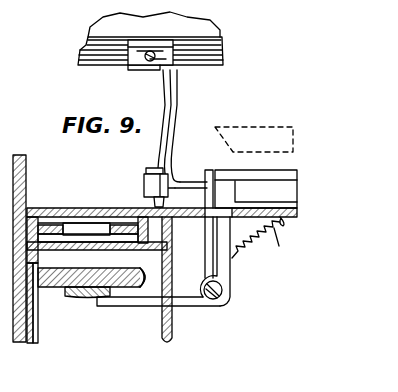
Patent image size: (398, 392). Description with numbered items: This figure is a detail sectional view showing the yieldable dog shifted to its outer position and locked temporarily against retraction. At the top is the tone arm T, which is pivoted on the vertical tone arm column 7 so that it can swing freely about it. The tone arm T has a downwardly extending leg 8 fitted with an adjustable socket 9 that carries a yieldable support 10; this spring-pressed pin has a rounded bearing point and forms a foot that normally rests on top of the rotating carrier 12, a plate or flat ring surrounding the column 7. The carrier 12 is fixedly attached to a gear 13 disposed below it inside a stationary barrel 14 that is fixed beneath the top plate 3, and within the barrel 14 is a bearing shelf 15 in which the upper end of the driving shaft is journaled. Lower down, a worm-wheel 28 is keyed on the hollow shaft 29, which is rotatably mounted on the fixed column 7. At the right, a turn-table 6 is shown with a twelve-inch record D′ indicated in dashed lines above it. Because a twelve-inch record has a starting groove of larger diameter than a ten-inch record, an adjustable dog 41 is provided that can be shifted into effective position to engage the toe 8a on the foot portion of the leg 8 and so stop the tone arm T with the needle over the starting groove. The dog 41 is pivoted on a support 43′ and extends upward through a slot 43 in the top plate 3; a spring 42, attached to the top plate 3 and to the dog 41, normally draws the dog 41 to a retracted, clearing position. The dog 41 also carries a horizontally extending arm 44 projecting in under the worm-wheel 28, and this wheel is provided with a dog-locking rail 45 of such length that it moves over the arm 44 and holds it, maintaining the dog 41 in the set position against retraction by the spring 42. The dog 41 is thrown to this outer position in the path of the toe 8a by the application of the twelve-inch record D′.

The tone arm T is at (213, 39).
The leg 8 is at (163, 96).
The toe 8a is at (197, 182).
The dog 41 is at (209, 170).
The twelve-inch record D′ is at (252, 171).
The turn-table 6 is at (273, 190).
The tone arm column 7 is at (27, 163).
The hollow shaft 29 is at (35, 338).
The carrier 12 is at (85, 208).
The gear 13 is at (118, 224).
The bearing shelf 15 is at (90, 247).
The barrel 14 is at (173, 335).
The worm-wheel 28 is at (134, 277).
The dog-locking rail 45 is at (88, 295).
The arm 44 is at (143, 305).
The support 43′ is at (222, 296).
The slot 43 is at (213, 222).
The spring 42 is at (240, 260).
The top plate 3 is at (279, 246).
The adjustable socket 9 is at (144, 190).
The yieldable support 10 is at (154, 203).